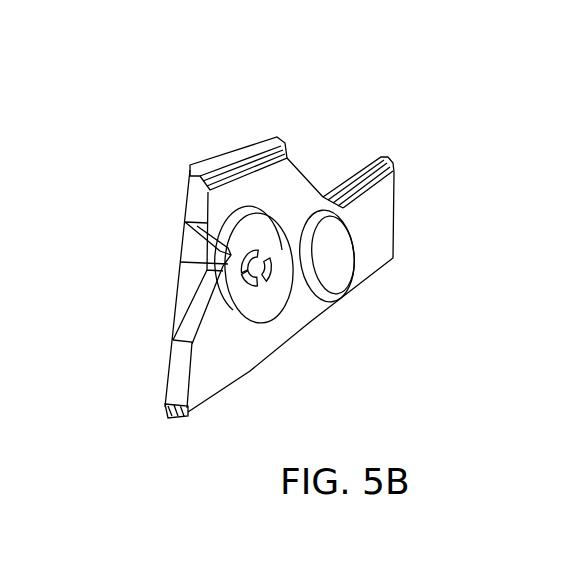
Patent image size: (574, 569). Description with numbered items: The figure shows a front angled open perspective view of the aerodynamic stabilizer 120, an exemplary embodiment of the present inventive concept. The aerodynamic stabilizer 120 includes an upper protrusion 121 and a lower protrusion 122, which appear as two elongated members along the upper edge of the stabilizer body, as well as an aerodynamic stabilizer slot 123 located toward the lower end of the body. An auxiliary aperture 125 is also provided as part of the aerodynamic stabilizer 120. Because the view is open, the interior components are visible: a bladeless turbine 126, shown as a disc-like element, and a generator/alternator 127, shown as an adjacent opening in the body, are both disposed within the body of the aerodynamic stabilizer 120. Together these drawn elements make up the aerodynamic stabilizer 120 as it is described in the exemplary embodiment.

The aerodynamic stabilizer 120 is at (380, 237).
The upper protrusion 121 is at (188, 165).
The lower protrusion 122 is at (377, 150).
The aerodynamic stabilizer slot 123 is at (166, 412).
The auxiliary aperture 125 is at (180, 262).
The bladeless turbine 126 is at (265, 305).
The generator/alternator 127 is at (335, 268).